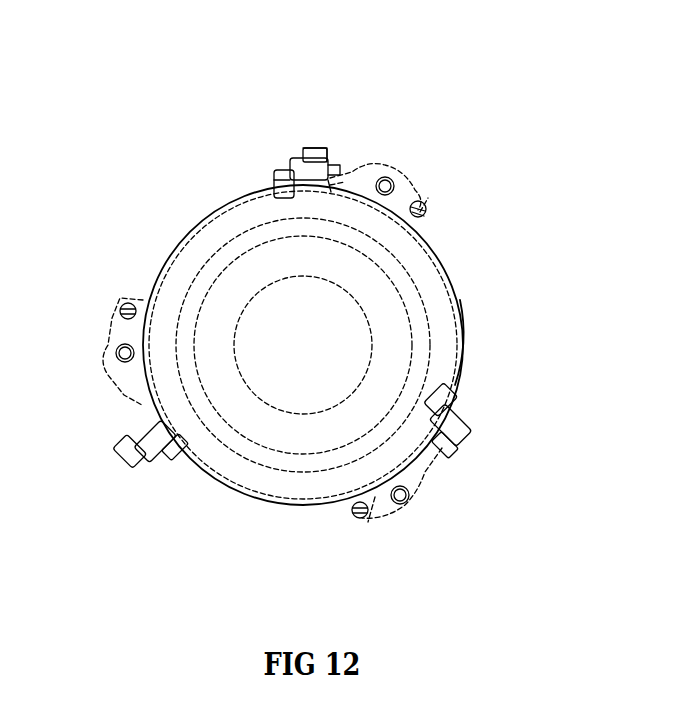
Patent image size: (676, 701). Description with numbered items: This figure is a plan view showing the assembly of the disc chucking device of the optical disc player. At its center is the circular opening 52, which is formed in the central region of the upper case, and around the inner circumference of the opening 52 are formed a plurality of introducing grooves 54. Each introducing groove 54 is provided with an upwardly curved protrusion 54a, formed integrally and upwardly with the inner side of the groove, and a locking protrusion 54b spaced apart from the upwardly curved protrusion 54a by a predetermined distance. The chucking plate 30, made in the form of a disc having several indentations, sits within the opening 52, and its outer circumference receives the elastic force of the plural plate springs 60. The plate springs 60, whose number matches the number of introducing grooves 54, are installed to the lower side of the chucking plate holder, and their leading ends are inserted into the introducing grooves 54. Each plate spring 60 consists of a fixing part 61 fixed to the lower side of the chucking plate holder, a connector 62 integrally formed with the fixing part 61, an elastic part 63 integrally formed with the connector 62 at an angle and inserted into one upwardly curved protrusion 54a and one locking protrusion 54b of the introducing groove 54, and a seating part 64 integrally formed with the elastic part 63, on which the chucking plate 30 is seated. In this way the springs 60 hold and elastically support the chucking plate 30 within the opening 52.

The chucking plate 30 is at (180, 243).
The circular opening 52 is at (461, 296).
The introducing grooves 54 is at (304, 149).
The upwardly curved protrusions 54a is at (327, 150).
The locking protrusions 54b is at (322, 180).
The plate springs 60 is at (104, 350).
The fixing part 61 is at (133, 333).
The connector 62 is at (148, 400).
The elastic part 63 is at (150, 436).
The seating part 64 is at (187, 445).